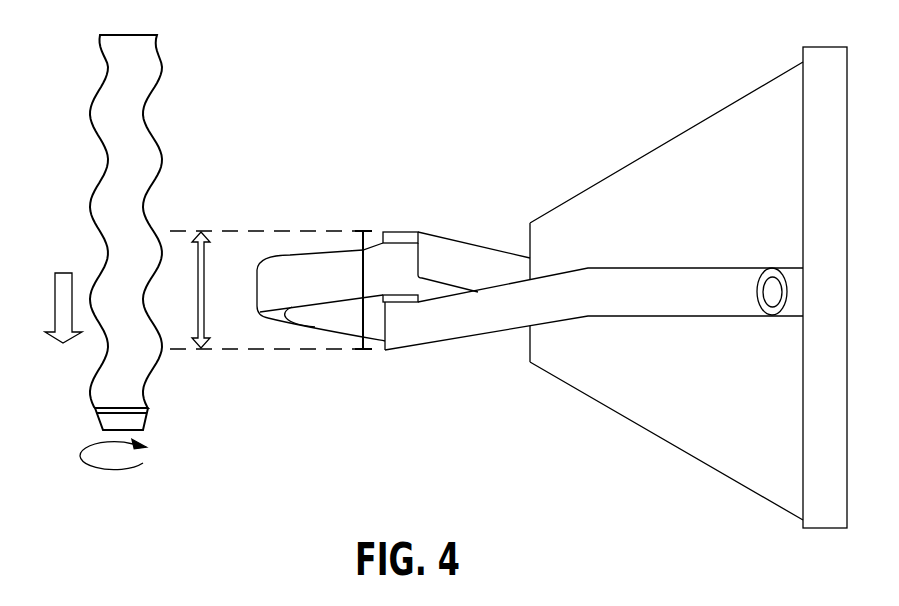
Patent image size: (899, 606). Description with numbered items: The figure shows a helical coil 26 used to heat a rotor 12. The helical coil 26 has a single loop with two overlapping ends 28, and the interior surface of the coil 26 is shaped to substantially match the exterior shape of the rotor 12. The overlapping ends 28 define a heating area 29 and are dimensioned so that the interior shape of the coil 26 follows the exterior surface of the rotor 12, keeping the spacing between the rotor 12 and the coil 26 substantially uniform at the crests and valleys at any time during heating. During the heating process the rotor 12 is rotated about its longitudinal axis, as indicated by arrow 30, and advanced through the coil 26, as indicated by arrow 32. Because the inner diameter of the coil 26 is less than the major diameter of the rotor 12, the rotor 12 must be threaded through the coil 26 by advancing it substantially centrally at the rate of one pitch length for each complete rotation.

The rotor 12 is at (130, 78).
The helical coil 26 is at (327, 278).
The overlapping ends 28 is at (392, 293).
The heating area 29 is at (199, 310).
The arrow 30 is at (115, 470).
The arrow 32 is at (57, 300).